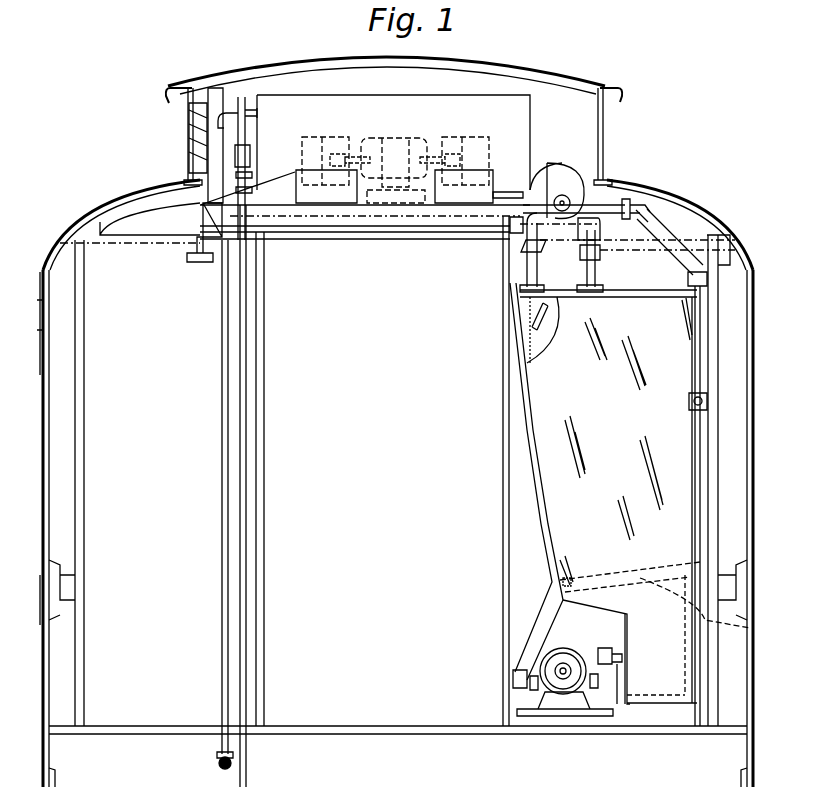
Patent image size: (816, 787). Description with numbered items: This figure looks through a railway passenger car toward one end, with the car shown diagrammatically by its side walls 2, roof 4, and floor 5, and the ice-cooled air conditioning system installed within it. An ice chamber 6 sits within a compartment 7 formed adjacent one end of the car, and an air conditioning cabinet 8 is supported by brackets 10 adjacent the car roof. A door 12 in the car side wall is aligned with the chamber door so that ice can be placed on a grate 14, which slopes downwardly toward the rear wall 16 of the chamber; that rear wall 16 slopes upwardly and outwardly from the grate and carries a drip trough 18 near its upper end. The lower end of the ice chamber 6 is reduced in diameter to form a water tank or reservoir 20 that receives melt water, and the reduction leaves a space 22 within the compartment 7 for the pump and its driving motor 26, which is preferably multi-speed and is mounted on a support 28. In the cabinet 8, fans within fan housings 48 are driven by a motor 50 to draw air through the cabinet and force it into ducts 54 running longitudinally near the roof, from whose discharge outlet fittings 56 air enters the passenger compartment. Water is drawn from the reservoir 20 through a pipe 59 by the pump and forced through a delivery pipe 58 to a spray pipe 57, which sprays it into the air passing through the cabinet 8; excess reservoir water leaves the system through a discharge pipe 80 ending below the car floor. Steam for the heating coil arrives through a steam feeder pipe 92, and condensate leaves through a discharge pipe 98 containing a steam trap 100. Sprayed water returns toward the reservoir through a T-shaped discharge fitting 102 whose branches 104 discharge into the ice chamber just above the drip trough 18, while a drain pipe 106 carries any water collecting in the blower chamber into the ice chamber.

The side walls 2 is at (45, 333).
The roof 4 is at (548, 72).
The floor 5 is at (404, 736).
The ice chamber 6 is at (560, 420).
The compartment 7 is at (530, 573).
The air conditioning cabinet 8 is at (515, 149).
The brackets 10 is at (538, 190).
The door 12 is at (750, 455).
The grate 14 is at (705, 626).
The rear wall 16 is at (548, 452).
The drip trough 18 is at (548, 306).
The water tank or reservoir 20 is at (655, 652).
The space 22 is at (608, 625).
The driving motor 26 is at (552, 668).
The support 28 is at (552, 703).
The fan housings 48 is at (315, 145).
The motor 50 is at (395, 140).
The ducts 54 is at (126, 230).
The discharge outlet fittings 56 is at (208, 264).
The spray pipe 57 is at (250, 148).
The delivery pipe 58 is at (316, 232).
The pipe 59 is at (622, 664).
The discharge pipe 80 is at (242, 347).
The steam feeder pipe 92 is at (225, 430).
The discharge pipe 98 is at (657, 222).
The steam trap 100 is at (707, 404).
The discharge fitting 102 is at (550, 158).
The branches 104 is at (532, 273).
The drain pipe 106 is at (598, 272).